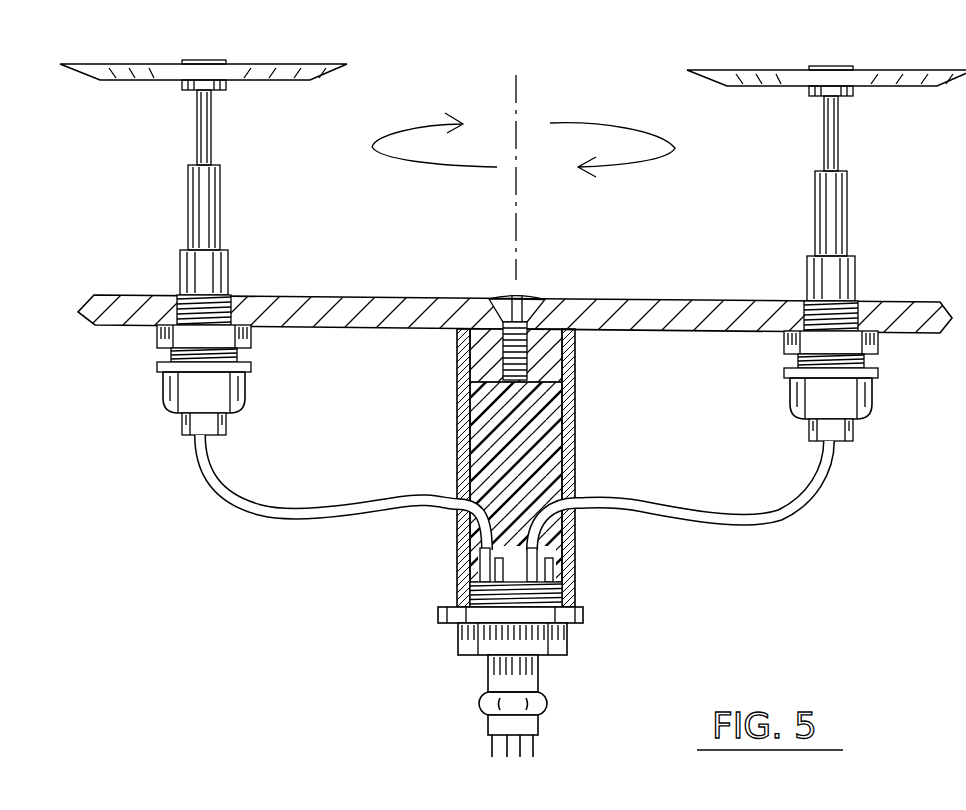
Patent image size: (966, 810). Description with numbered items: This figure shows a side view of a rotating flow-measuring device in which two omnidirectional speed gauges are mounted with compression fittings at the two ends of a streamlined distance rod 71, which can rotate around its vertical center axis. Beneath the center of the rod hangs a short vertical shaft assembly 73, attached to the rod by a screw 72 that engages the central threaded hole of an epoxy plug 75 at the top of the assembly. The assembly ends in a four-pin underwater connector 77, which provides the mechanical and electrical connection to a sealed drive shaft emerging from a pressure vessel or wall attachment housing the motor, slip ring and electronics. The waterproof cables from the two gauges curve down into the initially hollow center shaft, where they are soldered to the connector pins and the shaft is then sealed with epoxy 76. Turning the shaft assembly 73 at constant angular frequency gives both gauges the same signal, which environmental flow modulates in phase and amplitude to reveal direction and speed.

The distance rod 71 is at (372, 293).
The screw 72 is at (520, 297).
The epoxy plug 75 is at (557, 362).
The epoxy 76 is at (542, 437).
The shaft assembly 73 is at (660, 442).
The underwater connector 77 is at (588, 615).